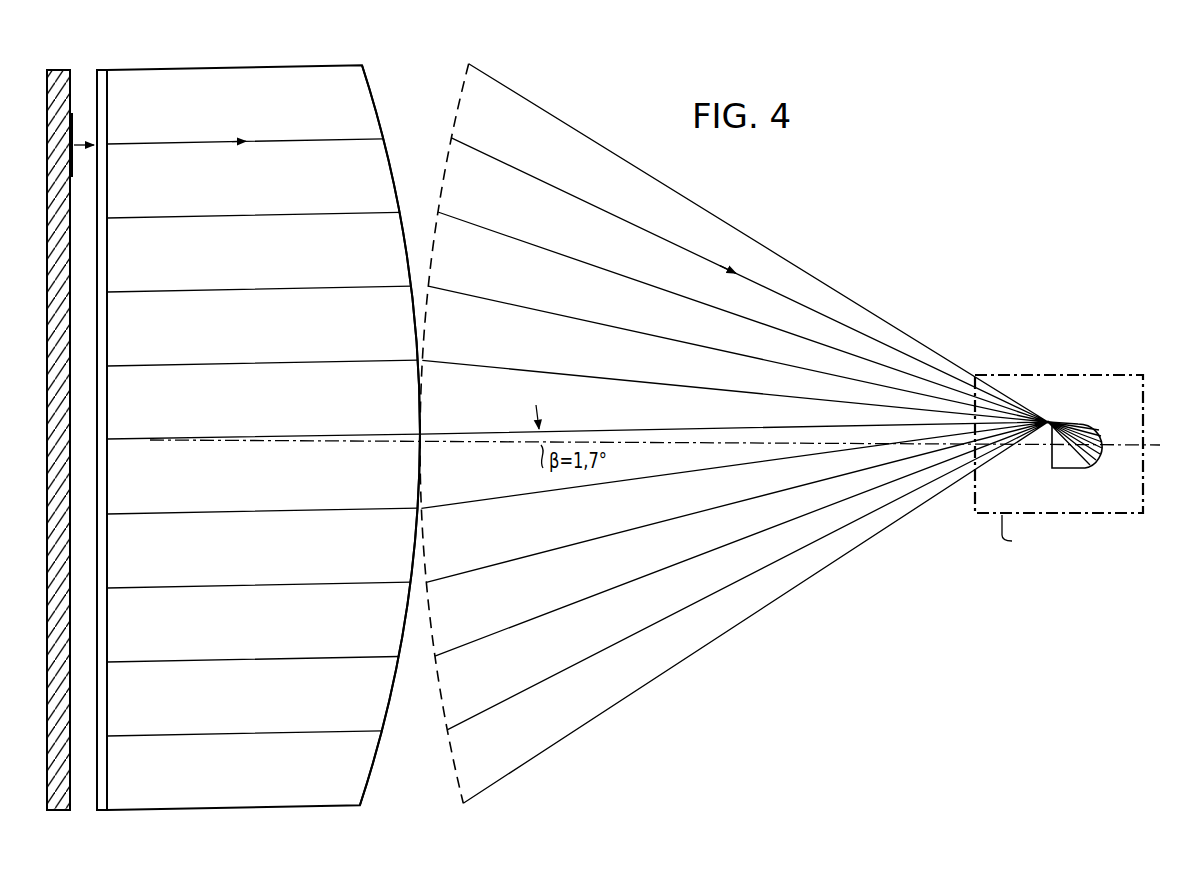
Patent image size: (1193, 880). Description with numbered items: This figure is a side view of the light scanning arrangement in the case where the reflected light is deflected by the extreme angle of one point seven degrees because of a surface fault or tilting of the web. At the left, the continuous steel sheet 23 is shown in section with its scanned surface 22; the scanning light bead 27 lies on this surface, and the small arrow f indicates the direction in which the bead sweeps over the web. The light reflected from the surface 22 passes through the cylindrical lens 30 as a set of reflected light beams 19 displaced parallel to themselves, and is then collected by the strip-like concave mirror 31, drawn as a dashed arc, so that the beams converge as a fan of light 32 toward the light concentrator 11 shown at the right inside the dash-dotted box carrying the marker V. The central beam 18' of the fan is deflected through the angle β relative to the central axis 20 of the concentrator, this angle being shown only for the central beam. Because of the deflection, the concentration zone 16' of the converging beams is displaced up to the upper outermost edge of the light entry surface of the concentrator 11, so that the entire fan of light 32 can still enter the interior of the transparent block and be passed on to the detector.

The light concentrator 11 is at (1075, 460).
The concentration zone 16' is at (1034, 380).
The convex lens surface 18' is at (387, 435).
The reflected light beams 19 is at (288, 141).
The central axis 20 is at (1150, 444).
The surface 22 is at (71, 327).
The steel web 23 is at (58, 401).
The scanning light bead 27 is at (74, 132).
The cylindrical lens 30 is at (107, 257).
The strip-like concave mirror 31 is at (418, 98).
The fan of light 32 is at (938, 348).
The scanning direction arrow f is at (74, 153).
The section indicator V is at (1019, 535).